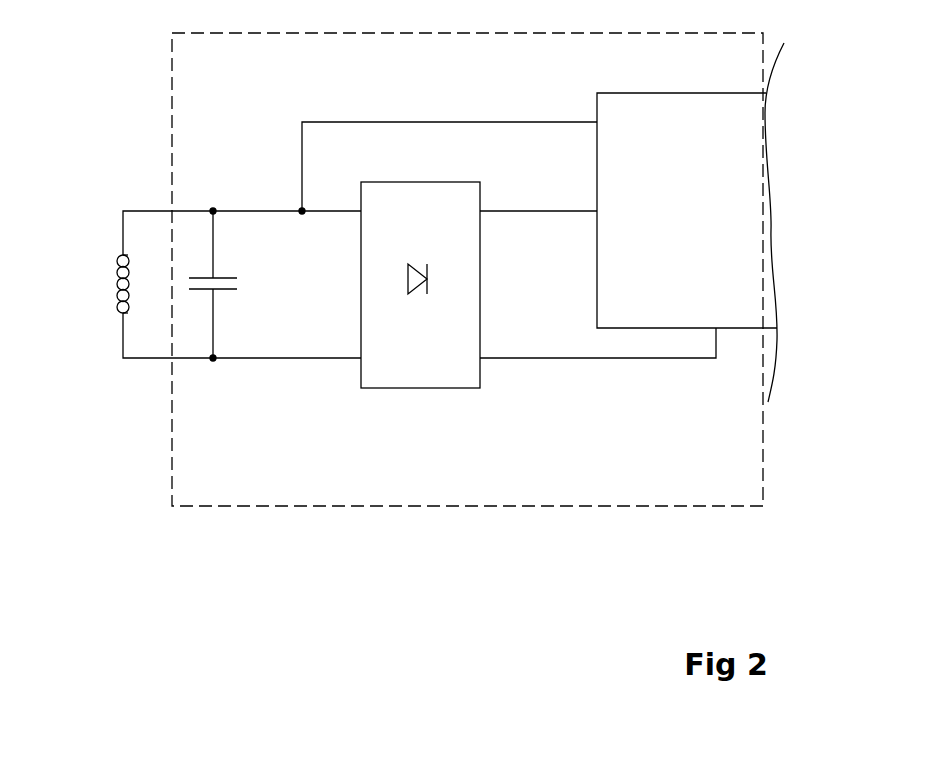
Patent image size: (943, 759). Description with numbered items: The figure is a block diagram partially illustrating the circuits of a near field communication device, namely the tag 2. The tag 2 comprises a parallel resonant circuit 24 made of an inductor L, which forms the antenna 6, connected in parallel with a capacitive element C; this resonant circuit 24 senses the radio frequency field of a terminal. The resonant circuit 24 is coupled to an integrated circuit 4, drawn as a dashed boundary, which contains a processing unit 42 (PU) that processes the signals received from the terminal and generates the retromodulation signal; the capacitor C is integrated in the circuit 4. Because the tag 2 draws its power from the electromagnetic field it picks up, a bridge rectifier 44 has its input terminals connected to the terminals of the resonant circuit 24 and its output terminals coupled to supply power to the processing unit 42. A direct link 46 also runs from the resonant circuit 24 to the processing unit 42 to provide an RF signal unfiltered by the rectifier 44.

The tag 2 is at (192, 538).
The integrated circuit 4 is at (362, 507).
The antenna 6 is at (117, 268).
The resonant circuit 24 is at (142, 372).
The processing unit 42 is at (667, 93).
The bridge rectifier 44 is at (447, 388).
The direct link 46 is at (427, 122).